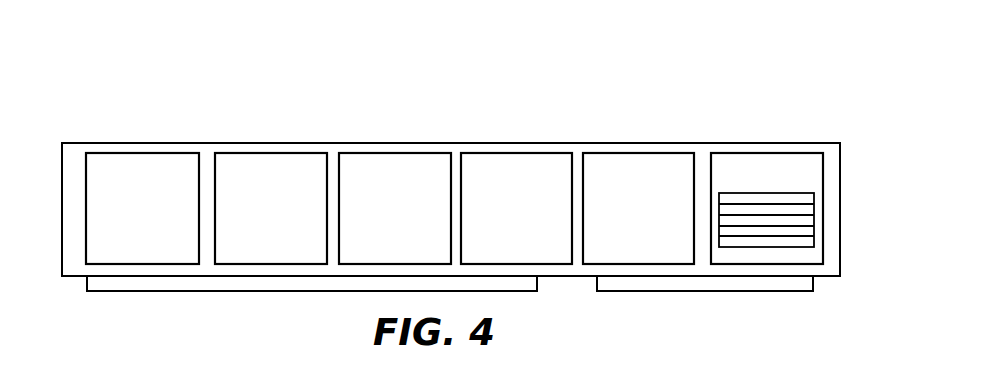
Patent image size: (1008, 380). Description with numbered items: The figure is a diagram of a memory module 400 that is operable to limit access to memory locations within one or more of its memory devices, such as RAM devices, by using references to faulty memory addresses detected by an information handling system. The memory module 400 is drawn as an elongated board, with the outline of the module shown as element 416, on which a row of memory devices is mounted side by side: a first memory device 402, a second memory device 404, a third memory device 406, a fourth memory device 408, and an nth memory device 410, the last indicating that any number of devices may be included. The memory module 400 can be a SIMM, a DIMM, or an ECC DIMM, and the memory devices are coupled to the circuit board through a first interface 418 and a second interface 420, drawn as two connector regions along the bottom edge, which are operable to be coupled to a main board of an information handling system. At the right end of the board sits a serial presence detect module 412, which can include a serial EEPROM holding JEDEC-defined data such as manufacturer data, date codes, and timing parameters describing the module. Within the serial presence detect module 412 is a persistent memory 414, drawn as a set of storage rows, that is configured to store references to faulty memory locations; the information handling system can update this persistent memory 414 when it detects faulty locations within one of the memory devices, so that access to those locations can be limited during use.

The memory module 400 is at (131, 63).
The first memory device 402 is at (107, 162).
The second memory device 404 is at (258, 160).
The third memory device 406 is at (392, 160).
The fourth memory device 408 is at (493, 158).
The nth memory device 410 is at (617, 157).
The serial presence detect module 412 is at (731, 159).
The persistent memory 414 is at (808, 199).
The memory module substrate / printed circuit board 416 is at (72, 208).
The first interface 418 is at (218, 283).
The second interface 420 is at (735, 284).